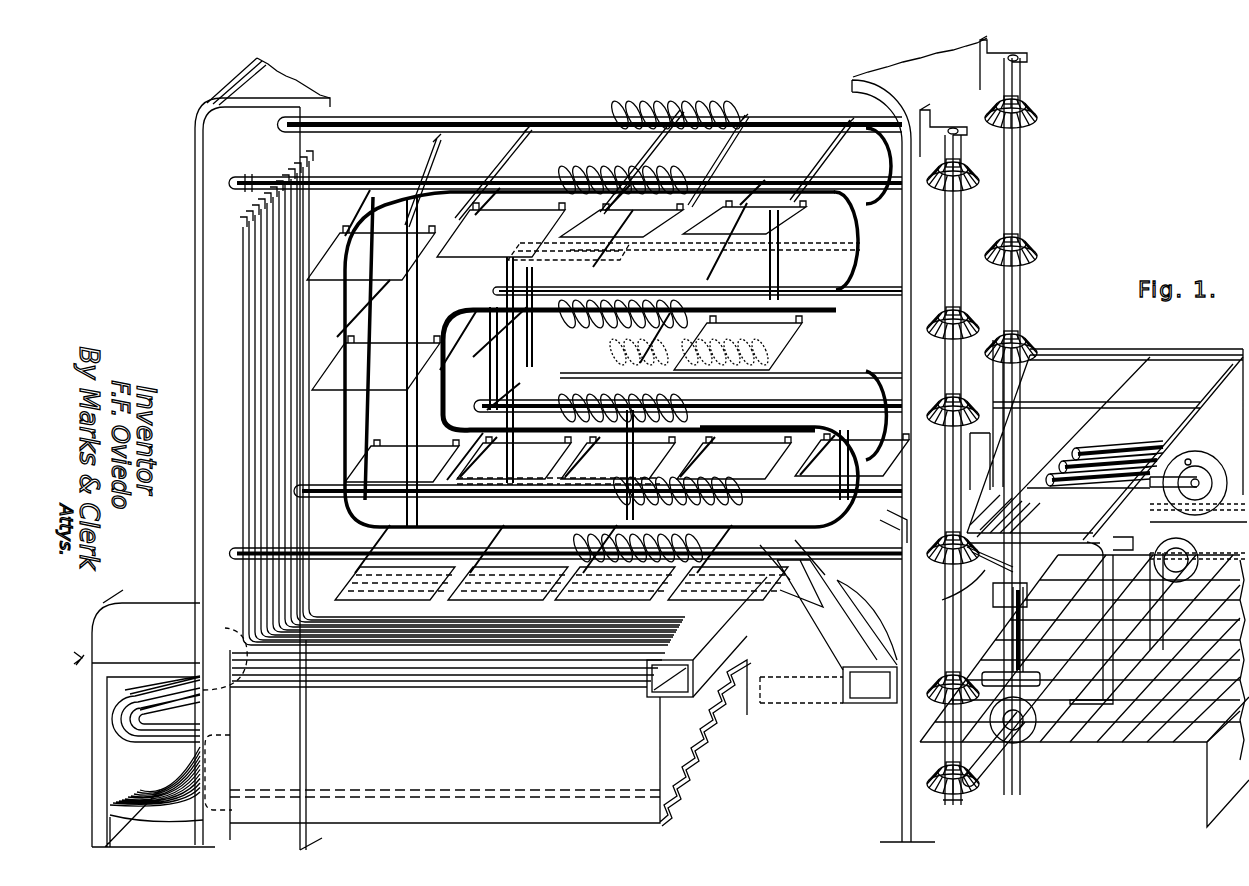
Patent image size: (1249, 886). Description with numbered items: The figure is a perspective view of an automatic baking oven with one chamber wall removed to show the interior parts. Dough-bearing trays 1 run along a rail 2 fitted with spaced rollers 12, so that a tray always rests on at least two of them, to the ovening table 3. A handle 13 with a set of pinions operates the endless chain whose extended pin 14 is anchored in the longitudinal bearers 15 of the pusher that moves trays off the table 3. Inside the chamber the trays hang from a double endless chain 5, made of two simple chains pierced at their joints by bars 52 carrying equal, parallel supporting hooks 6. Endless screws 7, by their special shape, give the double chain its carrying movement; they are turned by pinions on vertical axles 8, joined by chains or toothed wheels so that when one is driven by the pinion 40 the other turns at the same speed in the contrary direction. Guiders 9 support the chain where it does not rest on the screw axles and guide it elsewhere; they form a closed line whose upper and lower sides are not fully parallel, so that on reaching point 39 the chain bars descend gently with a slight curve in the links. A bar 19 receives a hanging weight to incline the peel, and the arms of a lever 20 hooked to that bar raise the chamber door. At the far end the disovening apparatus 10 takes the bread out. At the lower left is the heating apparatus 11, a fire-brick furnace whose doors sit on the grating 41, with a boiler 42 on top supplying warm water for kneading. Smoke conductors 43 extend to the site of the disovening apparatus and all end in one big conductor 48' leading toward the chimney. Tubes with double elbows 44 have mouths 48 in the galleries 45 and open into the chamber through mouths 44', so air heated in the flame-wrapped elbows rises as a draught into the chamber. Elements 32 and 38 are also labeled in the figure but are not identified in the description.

The trays 1 is at (718, 462).
The rail 2 is at (1136, 345).
The ovening table 3 is at (1027, 487).
The double endless chain 5 is at (855, 165).
The supporting hooks 6 is at (748, 140).
The endless screws 7 is at (858, 117).
The axles of the pinions 8 is at (1020, 205).
The guiders 9 is at (355, 238).
The disovening apparatus 10 is at (818, 605).
The heating apparatus 11 is at (153, 725).
The rollers 12 is at (1113, 470).
The handle 13 is at (1197, 455).
The pins 14 is at (1150, 514).
The longitudinal bearers 15 is at (1166, 492).
The bar 19 is at (985, 612).
The lever 20 is at (965, 578).
The delivery box 32 is at (828, 641).
The vertical shaft 38 is at (945, 195).
The point 39 is at (417, 147).
The pinion 40 is at (1001, 686).
The grating 41 is at (158, 797).
The boiler 42 is at (114, 627).
The smoke conductors 43 is at (405, 670).
The double elbows of the tubes 44 is at (155, 691).
The mouths inside the chamber 44' is at (462, 398).
The galleries 45 is at (665, 800).
The mouths of the tubes 48 is at (447, 787).
The big conductor 48' is at (642, 688).
The bars 52 is at (520, 185).